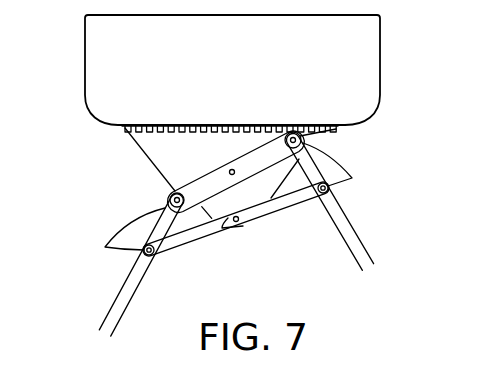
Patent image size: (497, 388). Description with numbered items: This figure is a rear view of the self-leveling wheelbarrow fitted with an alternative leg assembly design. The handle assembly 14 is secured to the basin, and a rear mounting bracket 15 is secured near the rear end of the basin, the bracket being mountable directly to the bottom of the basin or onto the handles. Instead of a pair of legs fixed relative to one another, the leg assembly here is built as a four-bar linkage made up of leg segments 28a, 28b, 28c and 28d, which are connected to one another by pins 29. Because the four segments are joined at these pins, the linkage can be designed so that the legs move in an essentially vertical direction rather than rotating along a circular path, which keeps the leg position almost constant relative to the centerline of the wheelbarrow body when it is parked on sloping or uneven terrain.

The handle assembly 14 is at (375, 72).
The rear mounting bracket 15 is at (143, 150).
The leg segment 28a is at (360, 243).
The leg segment 28b is at (108, 309).
The leg segment 28c is at (287, 204).
The leg segment 28d is at (166, 199).
The pins 29 is at (231, 170).